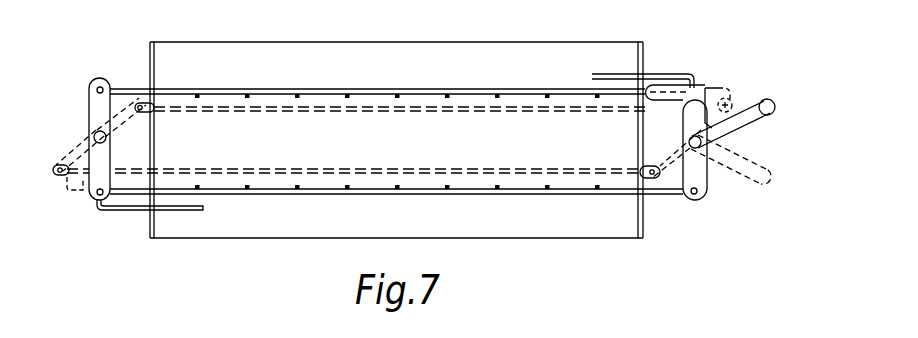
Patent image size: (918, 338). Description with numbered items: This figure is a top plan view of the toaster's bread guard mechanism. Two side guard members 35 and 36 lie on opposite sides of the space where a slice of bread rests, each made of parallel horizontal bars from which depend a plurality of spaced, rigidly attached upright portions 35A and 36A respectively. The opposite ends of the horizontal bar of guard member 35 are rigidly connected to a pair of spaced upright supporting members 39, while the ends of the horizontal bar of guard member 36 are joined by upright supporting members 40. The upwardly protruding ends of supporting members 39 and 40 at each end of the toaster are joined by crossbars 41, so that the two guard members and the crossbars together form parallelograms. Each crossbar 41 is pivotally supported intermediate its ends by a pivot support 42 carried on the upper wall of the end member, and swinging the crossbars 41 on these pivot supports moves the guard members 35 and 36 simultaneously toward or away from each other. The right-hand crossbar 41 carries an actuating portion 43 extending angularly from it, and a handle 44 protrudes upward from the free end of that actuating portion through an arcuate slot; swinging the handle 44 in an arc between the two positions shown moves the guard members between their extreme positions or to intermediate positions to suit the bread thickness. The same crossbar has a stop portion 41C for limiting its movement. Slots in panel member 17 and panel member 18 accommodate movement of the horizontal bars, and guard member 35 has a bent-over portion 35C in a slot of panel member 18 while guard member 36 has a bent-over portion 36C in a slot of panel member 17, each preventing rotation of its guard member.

The panel member 17 is at (645, 54).
The panel member 18 is at (150, 55).
The side guard member 35 is at (470, 196).
The upright portions 35A is at (298, 196).
The bent-over portion 35C is at (135, 212).
The side guard member 36 is at (510, 92).
The upright portions 36A is at (298, 94).
The bent-over portion 36C is at (660, 76).
The upright supporting members 39 is at (694, 196).
The upright supporting members 40 is at (702, 94).
The crossbars 41 is at (90, 104).
The stop portion 41C is at (668, 88).
The pivot supports 42 is at (94, 137).
The actuating portion 43 is at (770, 118).
The handle 44 is at (768, 99).